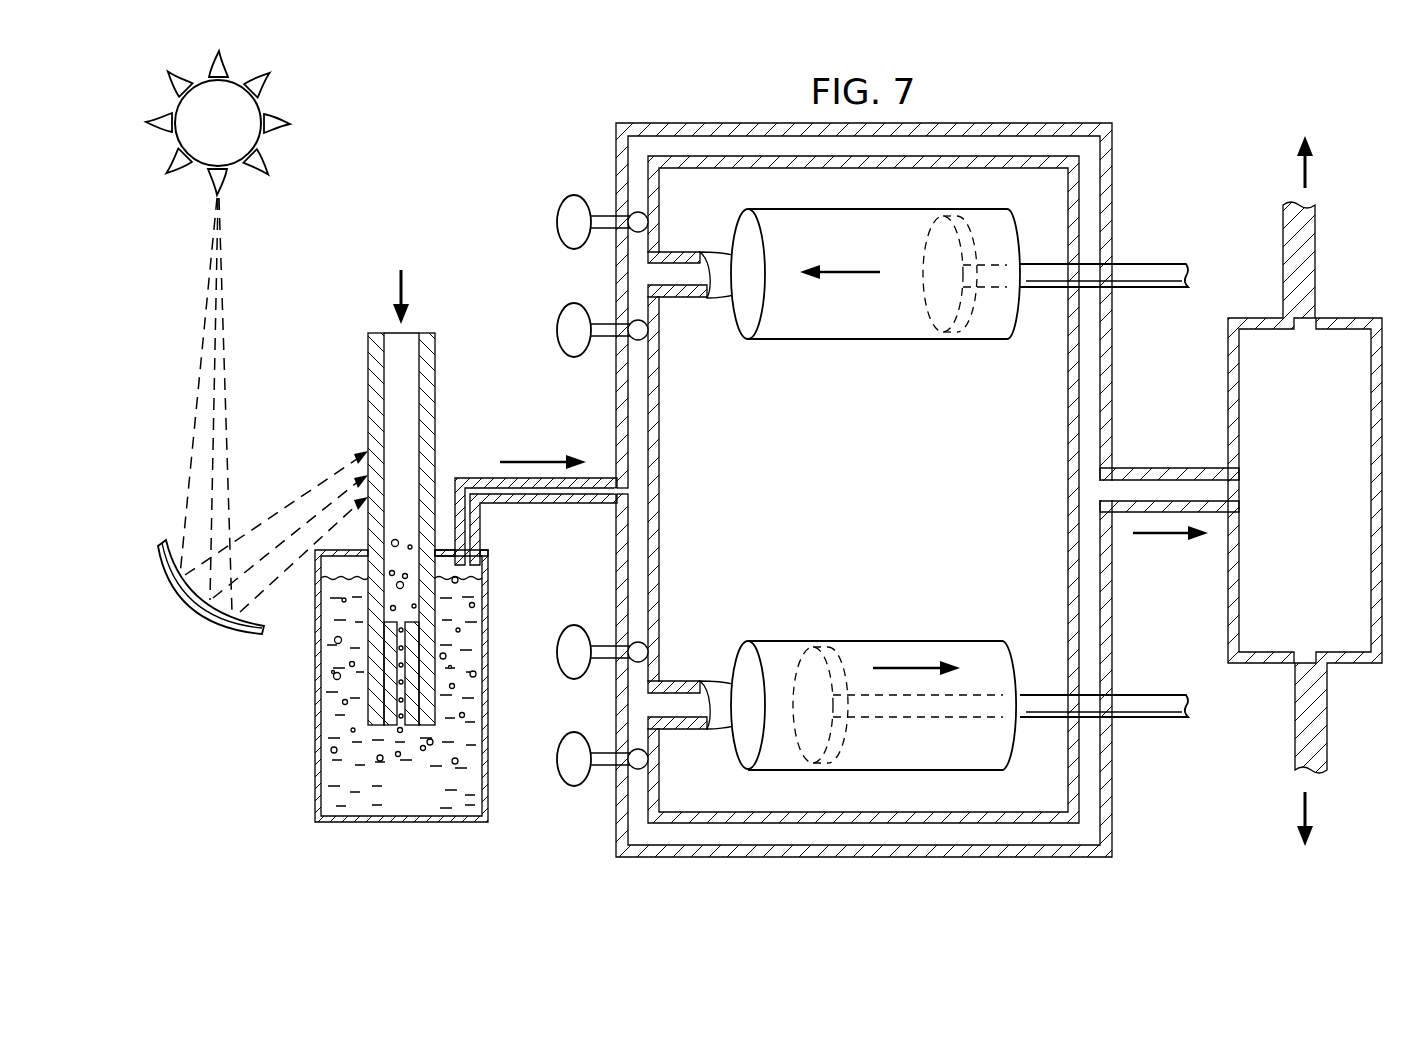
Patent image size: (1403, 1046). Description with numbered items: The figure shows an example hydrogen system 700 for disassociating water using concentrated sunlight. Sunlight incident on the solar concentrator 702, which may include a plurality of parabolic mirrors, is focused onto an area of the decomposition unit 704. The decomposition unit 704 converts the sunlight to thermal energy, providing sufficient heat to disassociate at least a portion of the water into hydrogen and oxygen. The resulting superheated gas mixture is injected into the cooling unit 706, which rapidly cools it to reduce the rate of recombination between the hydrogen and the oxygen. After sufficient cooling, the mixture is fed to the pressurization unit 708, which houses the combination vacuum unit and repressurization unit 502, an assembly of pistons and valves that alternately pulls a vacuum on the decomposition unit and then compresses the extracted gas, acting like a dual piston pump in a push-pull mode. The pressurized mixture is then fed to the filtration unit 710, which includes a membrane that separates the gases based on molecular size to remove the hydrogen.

The hydrogen system 700 is at (380, 92).
The solar concentrator 702 is at (232, 640).
The decomposition unit 704 is at (360, 380).
The cooling unit 706 is at (382, 798).
The pressurization unit 708 is at (1064, 114).
The combination vacuum unit and repressurization unit 502 is at (843, 506).
The filtration unit 710 is at (1285, 535).